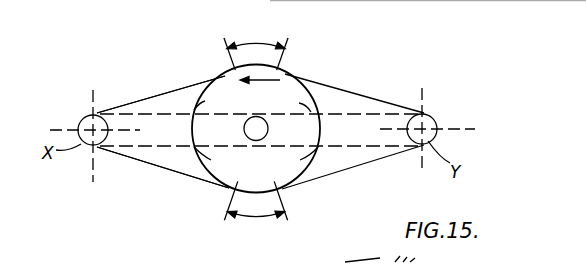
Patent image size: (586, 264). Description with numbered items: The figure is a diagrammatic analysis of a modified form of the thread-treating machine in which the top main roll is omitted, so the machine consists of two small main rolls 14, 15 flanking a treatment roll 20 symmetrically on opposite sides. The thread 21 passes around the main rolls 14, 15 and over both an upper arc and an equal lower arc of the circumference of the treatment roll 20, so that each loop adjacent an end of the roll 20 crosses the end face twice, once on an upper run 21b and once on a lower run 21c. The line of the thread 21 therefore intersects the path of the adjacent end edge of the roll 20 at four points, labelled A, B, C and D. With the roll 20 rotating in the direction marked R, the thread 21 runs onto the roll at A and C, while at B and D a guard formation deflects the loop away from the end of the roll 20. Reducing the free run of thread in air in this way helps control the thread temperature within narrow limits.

The small main roll 14 is at (86, 118).
The small main roll 15 is at (428, 115).
The treatment roll 20 is at (308, 92).
The thread 21 is at (138, 100).
The upper run 21b is at (173, 114).
The lower run 21c is at (163, 147).